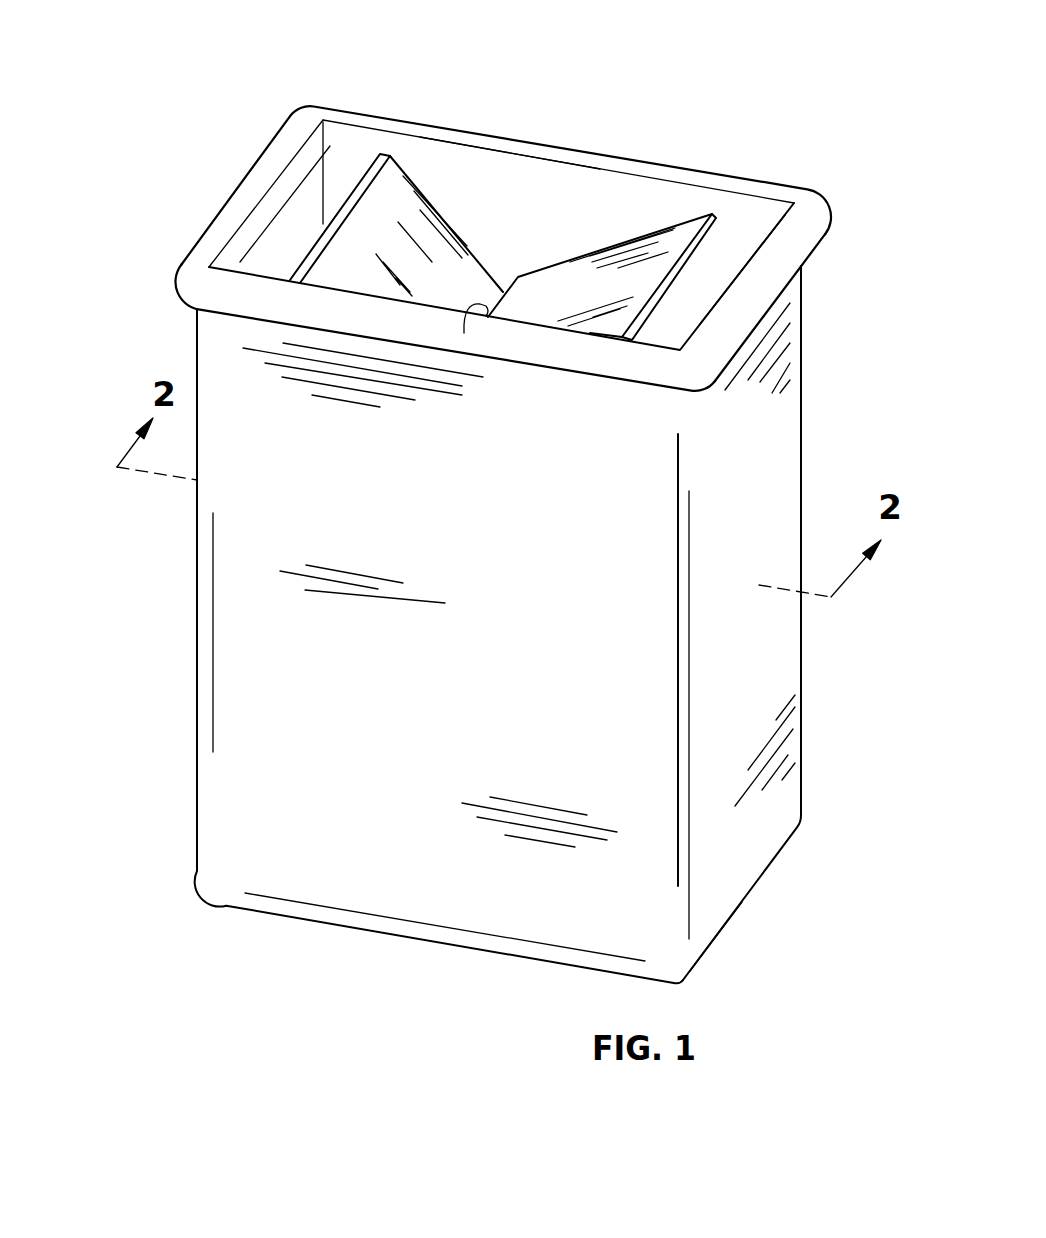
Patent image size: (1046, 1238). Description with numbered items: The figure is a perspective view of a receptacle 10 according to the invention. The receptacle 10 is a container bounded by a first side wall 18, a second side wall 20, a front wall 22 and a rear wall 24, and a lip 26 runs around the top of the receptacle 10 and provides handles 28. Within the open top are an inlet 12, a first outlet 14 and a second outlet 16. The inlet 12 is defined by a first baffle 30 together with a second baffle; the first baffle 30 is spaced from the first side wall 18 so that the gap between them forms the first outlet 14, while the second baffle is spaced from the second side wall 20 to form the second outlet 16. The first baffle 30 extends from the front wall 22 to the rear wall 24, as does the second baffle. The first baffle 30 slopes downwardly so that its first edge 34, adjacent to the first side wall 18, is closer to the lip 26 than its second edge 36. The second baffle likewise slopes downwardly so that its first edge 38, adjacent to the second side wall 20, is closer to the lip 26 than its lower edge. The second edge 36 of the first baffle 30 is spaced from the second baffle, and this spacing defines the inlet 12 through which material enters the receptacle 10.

The receptacle 10 is at (135, 627).
The inlet 12 is at (523, 200).
The first outlet 14 is at (748, 210).
The second outlet 16 is at (351, 148).
The first side wall 18 is at (720, 532).
The second side wall 20 is at (298, 241).
The front wall 22 is at (538, 601).
The rear wall 24 is at (483, 207).
The lip 26 is at (690, 150).
The handles 28 is at (200, 248).
The first baffle 30 is at (604, 248).
The first edge 34 is at (700, 249).
The second edge 36 is at (464, 333).
The first edge 38 is at (350, 197).